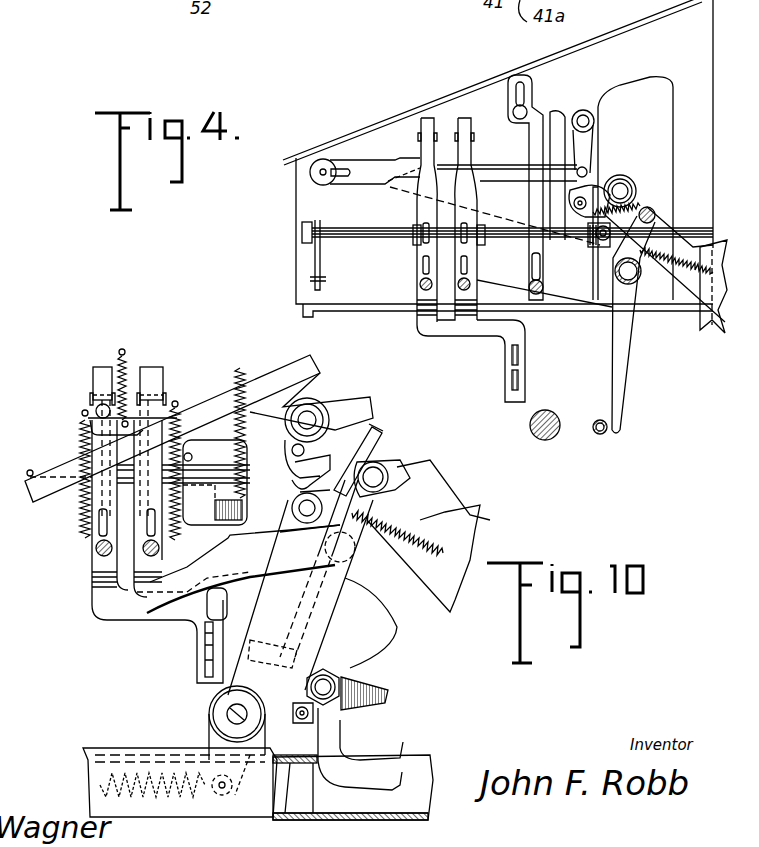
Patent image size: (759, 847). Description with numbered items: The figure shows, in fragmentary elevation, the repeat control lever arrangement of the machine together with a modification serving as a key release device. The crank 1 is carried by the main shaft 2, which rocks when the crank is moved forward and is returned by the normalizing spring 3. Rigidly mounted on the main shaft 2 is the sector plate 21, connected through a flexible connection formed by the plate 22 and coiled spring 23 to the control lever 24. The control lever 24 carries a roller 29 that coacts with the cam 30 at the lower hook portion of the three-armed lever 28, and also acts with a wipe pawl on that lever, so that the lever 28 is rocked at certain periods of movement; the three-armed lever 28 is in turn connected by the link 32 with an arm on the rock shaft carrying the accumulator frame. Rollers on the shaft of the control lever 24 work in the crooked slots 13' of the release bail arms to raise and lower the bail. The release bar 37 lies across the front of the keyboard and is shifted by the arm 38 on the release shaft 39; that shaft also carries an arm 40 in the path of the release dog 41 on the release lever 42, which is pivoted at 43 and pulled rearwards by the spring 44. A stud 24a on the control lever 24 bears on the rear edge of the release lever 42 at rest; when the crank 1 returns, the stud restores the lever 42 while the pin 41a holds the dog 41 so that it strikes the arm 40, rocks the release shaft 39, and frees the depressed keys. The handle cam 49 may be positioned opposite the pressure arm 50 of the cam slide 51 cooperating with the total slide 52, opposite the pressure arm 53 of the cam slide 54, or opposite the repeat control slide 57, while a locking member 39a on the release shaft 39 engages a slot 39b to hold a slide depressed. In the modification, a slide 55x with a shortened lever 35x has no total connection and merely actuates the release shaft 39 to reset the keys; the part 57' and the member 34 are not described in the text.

In FIG. 10, the crank 1 is at (307, 630).
In FIG. 4, the main shaft 2 is at (538, 435).
In FIG. 10, the normalizing spring 3 is at (95, 785).
In FIG. 10, the crooked slots 13' is at (360, 749).
In FIG. 10, the sector plate 21 is at (367, 608).
In FIG. 10, the plate 22 is at (392, 680).
In FIG. 10, the coiled spring 23 is at (392, 706).
In FIG. 4, the control lever 24 is at (700, 325).
In FIG. 10, the control lever 24 is at (478, 510).
In FIG. 4, the stud 24a is at (656, 215).
In FIG. 10, the three-armed lever 28 is at (384, 436).
In FIG. 10, the roller 29 is at (390, 460).
In FIG. 10, the cam 30 is at (412, 480).
In FIG. 10, the link 32 is at (315, 360).
In FIG. 10, the rod 34 is at (265, 417).
In FIG. 10, the lever 35x is at (238, 569).
In FIG. 4, the release bar 37 is at (312, 277).
In FIG. 4, the arm 38 is at (321, 257).
In FIG. 4, the release shaft 39 is at (358, 234).
In FIG. 10, the release shaft 39 is at (45, 460).
In FIG. 4, the locking and release member 39a is at (420, 270).
In FIG. 4, the slot 39b is at (422, 245).
In FIG. 4, the arm 40 is at (637, 196).
In FIG. 4, the release dog 41 is at (560, 215).
In FIG. 4, the pin 41a is at (606, 178).
In FIG. 4, the release lever 42 is at (630, 330).
In FIG. 4, the pivot 43 is at (640, 280).
In FIG. 4, the spring 44 is at (610, 252).
In FIG. 10, the spring 44 is at (365, 555).
In FIG. 10, the cam 49 is at (252, 628).
In FIG. 10, the pressure arm 50 is at (250, 643).
In FIG. 4, the cam slide 51 is at (520, 353).
In FIG. 4, the total slide 52 is at (432, 327).
In FIG. 10, the total slide 52 is at (105, 560).
In FIG. 10, the pressure arm 53 is at (220, 660).
In FIG. 4, the cam slide 54 is at (520, 379).
In FIG. 10, the slide 55x is at (150, 384).
In FIG. 10, the repeat control slide 57 is at (345, 722).
In FIG. 4, the pin 57' is at (603, 443).